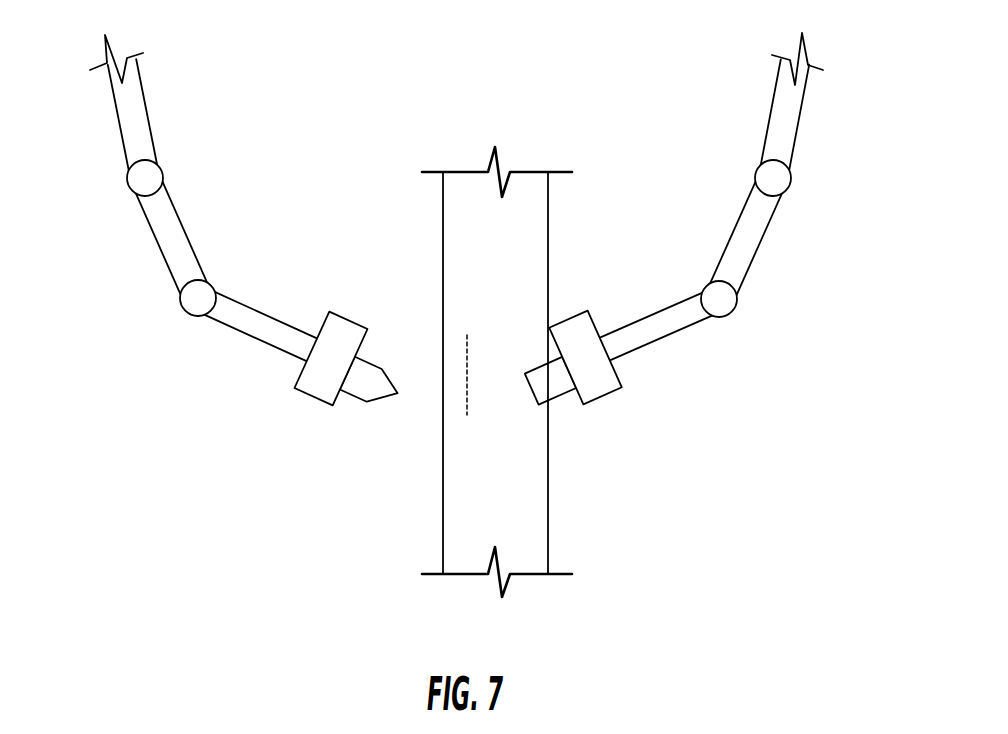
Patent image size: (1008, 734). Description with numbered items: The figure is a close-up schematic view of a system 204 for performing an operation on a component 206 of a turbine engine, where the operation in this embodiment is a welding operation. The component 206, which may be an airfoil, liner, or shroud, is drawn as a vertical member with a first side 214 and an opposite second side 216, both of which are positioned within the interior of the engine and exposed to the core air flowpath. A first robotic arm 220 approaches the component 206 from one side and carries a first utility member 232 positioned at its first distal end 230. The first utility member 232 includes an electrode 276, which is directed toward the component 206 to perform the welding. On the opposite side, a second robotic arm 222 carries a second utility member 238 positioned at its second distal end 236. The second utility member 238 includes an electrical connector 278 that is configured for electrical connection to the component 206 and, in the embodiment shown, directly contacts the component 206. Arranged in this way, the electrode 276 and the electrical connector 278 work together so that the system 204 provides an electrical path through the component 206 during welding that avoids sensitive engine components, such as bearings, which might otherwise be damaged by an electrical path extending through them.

The system 204 is at (700, 261).
The component 206 is at (457, 348).
The first side 214 is at (350, 193).
The second side 216 is at (553, 250).
The first robotic arm 220 is at (225, 259).
The second robotic arm 222 is at (700, 261).
The first distal end 230 is at (272, 382).
The first utility member 232 is at (343, 323).
The second distal end 236 is at (647, 377).
The second utility member 238 is at (572, 305).
The electrode 276 is at (353, 397).
The electrical connector 278 is at (555, 402).